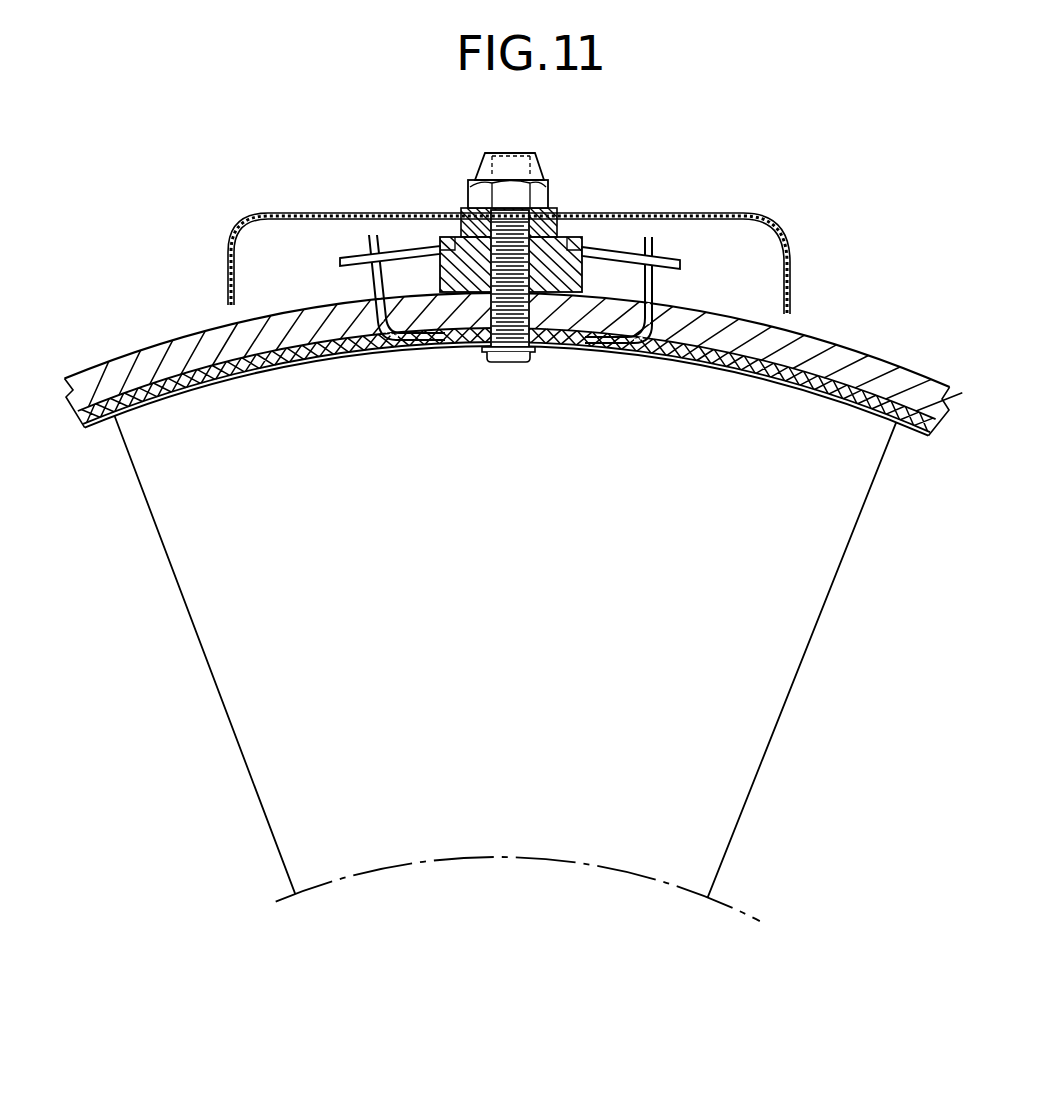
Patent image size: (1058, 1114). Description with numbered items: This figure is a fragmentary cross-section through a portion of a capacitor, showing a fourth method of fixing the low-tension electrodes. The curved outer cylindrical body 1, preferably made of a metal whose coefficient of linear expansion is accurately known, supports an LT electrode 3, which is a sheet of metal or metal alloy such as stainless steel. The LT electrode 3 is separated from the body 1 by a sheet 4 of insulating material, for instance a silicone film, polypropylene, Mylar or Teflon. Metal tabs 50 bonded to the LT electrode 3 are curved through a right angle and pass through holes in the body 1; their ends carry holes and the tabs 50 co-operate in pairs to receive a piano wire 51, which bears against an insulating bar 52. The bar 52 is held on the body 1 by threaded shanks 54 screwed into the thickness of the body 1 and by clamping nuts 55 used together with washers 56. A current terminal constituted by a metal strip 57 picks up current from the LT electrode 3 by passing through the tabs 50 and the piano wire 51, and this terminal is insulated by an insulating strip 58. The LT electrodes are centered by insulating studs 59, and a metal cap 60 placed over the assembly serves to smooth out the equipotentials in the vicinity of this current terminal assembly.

The outer cylindrical body 1 is at (836, 356).
The LT electrode 3 is at (218, 387).
The sheet of insulating material 4 is at (98, 425).
The metal tab 50 is at (372, 280).
The piano wire 51 is at (343, 260).
The insulating bar 52 is at (572, 350).
The threaded shank 54 is at (490, 349).
The clamping nut 55 is at (540, 176).
The washer 56 is at (470, 200).
The metal strip 57 is at (464, 228).
The insulating strip 58 is at (567, 232).
The insulating stud 59 is at (520, 363).
The metal cap 60 is at (795, 252).